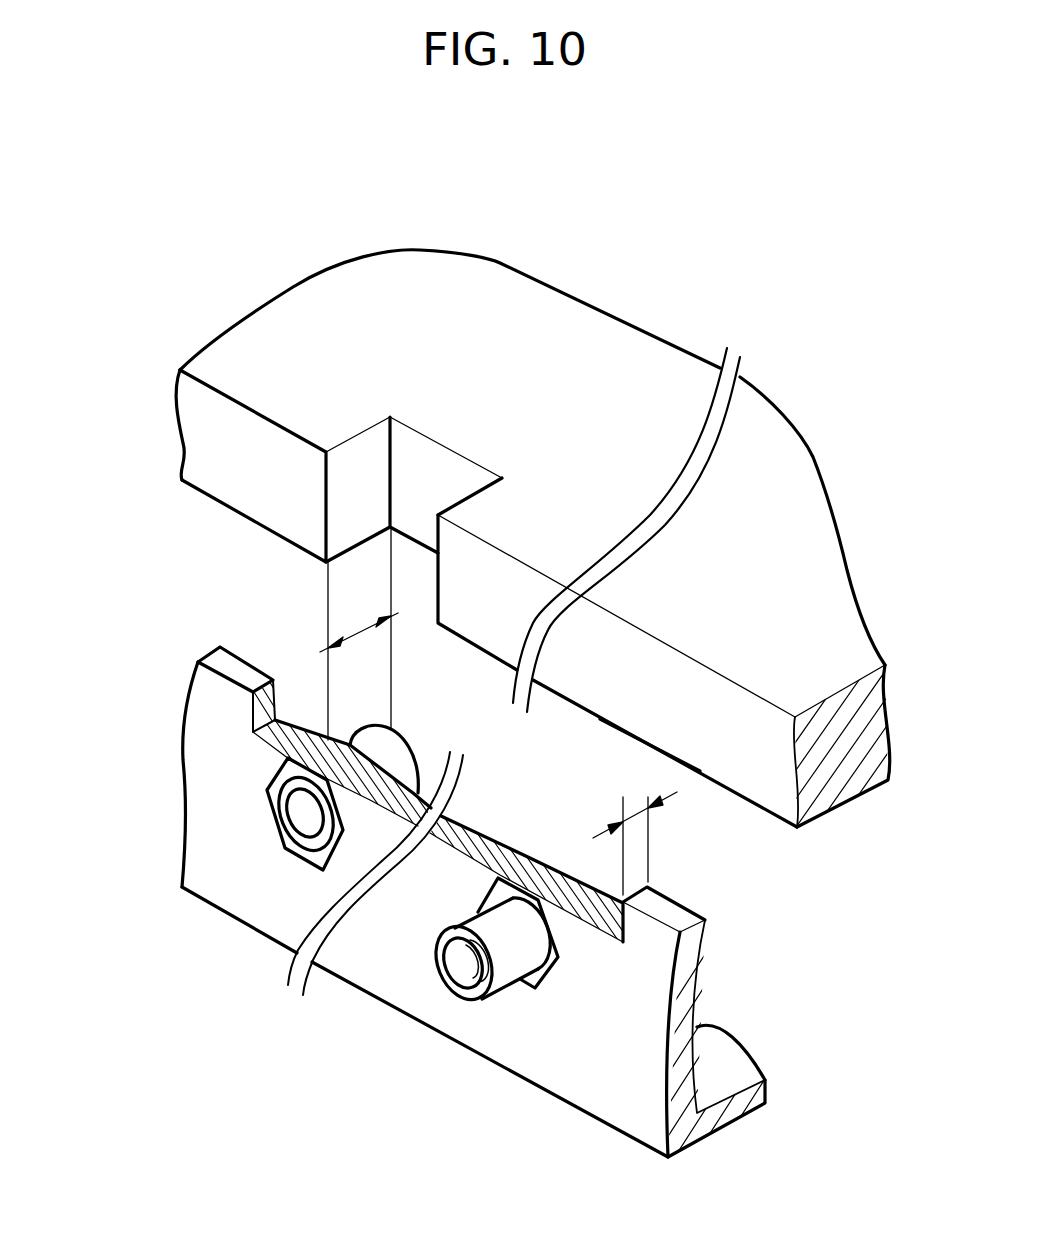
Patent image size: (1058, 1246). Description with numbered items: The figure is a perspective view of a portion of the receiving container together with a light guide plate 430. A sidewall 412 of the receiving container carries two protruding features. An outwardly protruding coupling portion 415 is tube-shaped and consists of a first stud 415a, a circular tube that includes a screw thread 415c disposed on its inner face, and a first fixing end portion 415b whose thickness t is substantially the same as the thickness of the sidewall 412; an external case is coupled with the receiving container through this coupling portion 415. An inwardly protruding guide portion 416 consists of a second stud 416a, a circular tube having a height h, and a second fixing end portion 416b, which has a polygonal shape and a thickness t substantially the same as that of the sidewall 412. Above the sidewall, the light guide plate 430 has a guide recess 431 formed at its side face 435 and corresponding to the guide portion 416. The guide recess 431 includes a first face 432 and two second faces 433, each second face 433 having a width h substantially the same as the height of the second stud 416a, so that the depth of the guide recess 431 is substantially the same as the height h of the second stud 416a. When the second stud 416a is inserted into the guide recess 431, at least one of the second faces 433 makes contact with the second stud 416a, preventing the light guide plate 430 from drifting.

The sidewall 412 is at (631, 1112).
The coupling portion 415 is at (490, 1148).
The first stud 415a is at (532, 955).
The first fixing end portion 415b is at (538, 978).
The screw thread 415c is at (460, 987).
The guide portion 416 is at (99, 717).
The second stud 416a is at (355, 737).
The second fixing end portion 416b is at (288, 762).
The light guide plate 430 is at (835, 568).
The guide recess 431 is at (536, 342).
The first face 432 is at (423, 448).
The second face 433 is at (480, 478).
The side face 435 is at (732, 773).